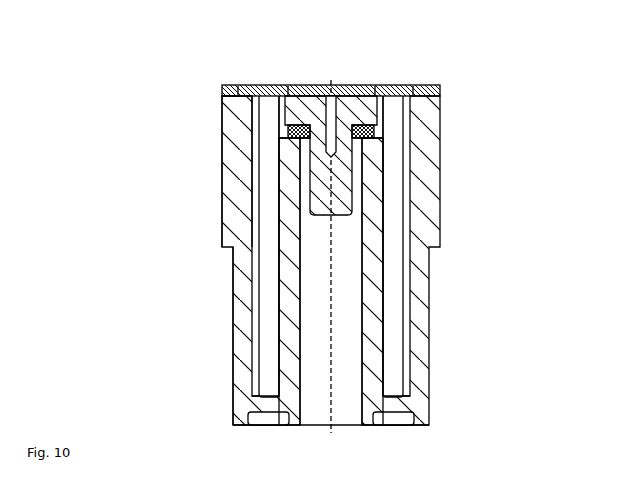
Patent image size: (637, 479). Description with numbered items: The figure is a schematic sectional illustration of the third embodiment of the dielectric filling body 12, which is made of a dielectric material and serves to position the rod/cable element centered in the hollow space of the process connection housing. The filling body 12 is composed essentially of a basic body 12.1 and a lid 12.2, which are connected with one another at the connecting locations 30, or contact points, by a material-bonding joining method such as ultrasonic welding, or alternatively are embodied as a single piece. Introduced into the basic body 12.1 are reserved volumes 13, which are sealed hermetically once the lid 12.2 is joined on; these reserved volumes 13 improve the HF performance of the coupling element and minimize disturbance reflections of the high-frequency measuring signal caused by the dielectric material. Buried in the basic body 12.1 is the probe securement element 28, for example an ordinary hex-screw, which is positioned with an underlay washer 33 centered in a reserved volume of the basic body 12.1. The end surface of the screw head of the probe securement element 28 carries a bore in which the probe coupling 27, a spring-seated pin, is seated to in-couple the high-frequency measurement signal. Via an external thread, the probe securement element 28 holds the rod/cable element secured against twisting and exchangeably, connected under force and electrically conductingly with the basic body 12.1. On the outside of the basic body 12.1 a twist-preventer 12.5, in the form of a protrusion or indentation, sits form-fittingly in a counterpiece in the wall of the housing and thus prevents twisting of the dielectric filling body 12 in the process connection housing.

The dielectric filling body 12 is at (433, 244).
The basic body 12.1 is at (233, 332).
The lid 12.2 is at (222, 91).
The twist-preventer 12.5 is at (222, 110).
The reserved volumes 13 is at (392, 208).
The probe coupling 27 is at (438, 93).
The probe securement element 28 is at (352, 188).
The connecting locations 30 is at (413, 86).
The underlay washer 33 is at (366, 130).